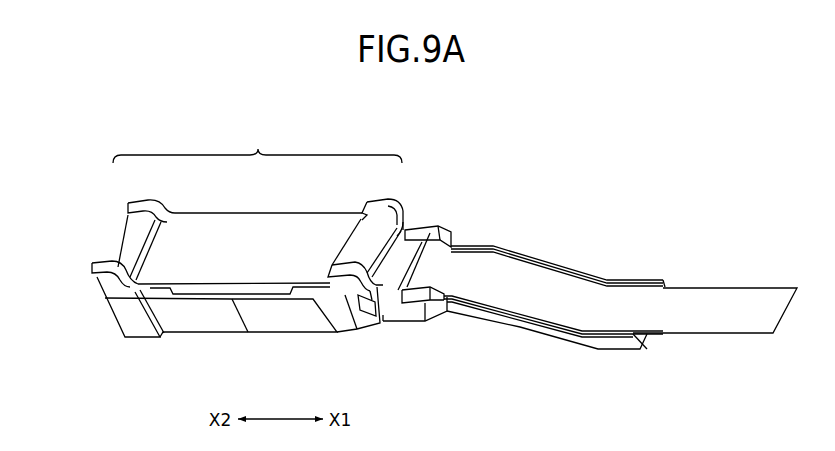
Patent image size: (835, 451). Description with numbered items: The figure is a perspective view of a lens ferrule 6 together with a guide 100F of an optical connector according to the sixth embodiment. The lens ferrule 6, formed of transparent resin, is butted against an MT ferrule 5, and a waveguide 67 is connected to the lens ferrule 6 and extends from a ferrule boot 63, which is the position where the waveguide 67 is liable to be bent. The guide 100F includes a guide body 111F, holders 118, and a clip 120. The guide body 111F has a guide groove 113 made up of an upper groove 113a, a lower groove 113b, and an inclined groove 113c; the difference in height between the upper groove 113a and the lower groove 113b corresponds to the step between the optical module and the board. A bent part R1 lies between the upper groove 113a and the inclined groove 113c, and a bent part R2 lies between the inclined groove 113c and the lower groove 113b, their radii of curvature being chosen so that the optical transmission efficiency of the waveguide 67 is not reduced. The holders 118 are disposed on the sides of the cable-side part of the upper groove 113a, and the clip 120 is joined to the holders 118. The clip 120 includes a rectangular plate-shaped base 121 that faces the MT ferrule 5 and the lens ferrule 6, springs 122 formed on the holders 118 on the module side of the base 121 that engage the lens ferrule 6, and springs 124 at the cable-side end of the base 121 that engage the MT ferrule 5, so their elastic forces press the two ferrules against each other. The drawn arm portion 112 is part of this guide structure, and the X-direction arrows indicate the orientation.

The clip 120 is at (257, 141).
The base 121 is at (247, 232).
The springs 124 is at (128, 228).
The MT ferrule 5 is at (196, 334).
The lens ferrule 6 is at (288, 334).
The ferrule boot 63 is at (398, 235).
The springs 122 is at (403, 232).
The holders 118 is at (423, 230).
The arm portion 112 is at (543, 275).
The guide body 111F is at (544, 333).
The guide 100F is at (437, 331).
The waveguide 67 is at (733, 302).
The upper groove 113a is at (438, 292).
The bent part R1 is at (465, 296).
The guide groove 113 is at (545, 245).
The inclined groove 113c is at (588, 328).
The bent part R2 is at (598, 332).
The lower groove 113b is at (637, 332).